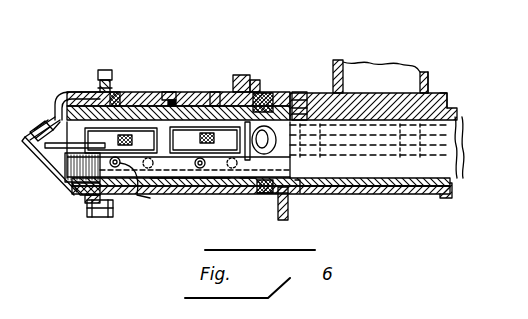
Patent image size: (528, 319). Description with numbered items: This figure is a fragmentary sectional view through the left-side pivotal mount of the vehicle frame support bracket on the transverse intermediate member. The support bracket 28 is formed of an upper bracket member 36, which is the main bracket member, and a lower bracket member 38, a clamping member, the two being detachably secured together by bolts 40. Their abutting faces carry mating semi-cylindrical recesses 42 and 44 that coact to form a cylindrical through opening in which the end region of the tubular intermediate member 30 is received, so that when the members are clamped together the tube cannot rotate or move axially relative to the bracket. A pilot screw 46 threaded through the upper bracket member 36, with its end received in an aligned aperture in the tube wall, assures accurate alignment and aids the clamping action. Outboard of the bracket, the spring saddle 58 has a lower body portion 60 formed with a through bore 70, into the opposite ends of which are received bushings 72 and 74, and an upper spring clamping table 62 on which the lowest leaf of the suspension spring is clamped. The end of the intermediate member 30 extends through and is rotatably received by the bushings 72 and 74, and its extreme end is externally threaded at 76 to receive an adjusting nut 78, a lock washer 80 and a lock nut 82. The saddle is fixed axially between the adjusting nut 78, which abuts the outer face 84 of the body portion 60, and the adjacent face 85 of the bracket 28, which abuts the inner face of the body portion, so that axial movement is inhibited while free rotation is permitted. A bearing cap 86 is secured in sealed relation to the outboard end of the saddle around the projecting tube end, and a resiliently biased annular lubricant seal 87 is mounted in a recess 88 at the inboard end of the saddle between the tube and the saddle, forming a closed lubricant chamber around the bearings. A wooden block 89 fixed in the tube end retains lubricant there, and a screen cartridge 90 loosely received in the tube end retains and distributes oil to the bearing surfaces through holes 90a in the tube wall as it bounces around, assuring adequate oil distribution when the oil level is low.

The support bracket 28 is at (376, 60).
The intermediate member 30 is at (458, 112).
The upper bracket member 36 is at (431, 78).
The lower bracket member 38 is at (453, 196).
The bolts 40 is at (462, 133).
The semi-cylindrical recess 42 is at (449, 99).
The semi-cylindrical recess 44 is at (382, 190).
The pilot screw 46 is at (300, 92).
The spring saddle 58 is at (220, 200).
The lower body portion 60 is at (247, 70).
The spring clamping table 62 is at (113, 86).
The through bore 70 is at (176, 98).
The bushing 72 is at (160, 90).
The bushing 74 is at (216, 92).
The external threads 76 is at (57, 104).
The adjusting nut 78 is at (88, 200).
The lock washer 80 is at (75, 190).
The lock nut 82 is at (85, 92).
The outer face 84 is at (98, 217).
The adjacent face 85 is at (273, 196).
The bearing cap 86 is at (45, 183).
The annular lubricant seal 87 is at (268, 92).
The recess 88 is at (255, 192).
The wooden block 89 is at (304, 188).
The screen cartridge 90 is at (60, 118).
The holes 90a is at (147, 178).